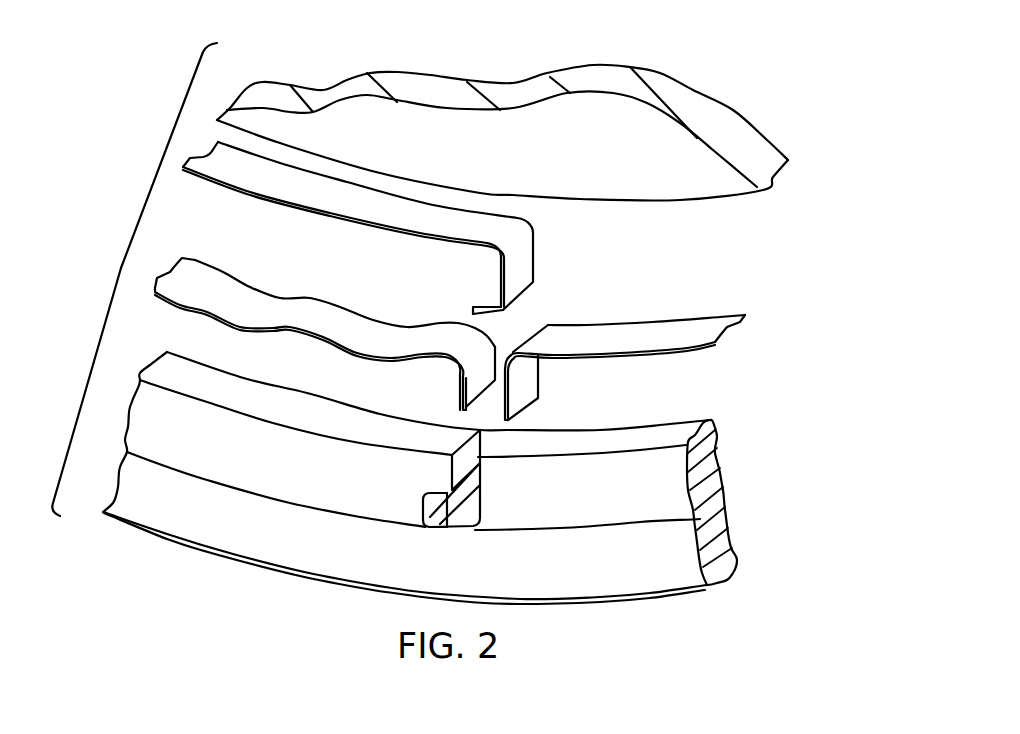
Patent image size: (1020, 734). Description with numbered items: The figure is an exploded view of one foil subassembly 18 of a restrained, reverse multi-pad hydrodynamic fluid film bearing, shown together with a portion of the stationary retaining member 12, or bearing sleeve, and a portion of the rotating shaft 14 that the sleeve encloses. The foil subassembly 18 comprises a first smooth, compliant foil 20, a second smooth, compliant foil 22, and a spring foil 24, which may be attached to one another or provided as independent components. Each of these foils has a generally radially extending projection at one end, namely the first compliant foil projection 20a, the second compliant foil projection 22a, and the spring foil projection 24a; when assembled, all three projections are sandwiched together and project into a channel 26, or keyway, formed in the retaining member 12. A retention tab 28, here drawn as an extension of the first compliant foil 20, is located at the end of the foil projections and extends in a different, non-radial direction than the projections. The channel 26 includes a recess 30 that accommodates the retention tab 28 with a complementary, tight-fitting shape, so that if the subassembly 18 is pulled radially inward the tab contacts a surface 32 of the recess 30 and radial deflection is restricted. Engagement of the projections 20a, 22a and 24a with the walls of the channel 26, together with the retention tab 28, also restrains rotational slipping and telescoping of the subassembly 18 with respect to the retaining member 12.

The stationary retaining member 12 is at (420, 478).
The shaft 14 is at (507, 127).
The foil subassembly 18 is at (585, 300).
The first compliant foil 20 is at (392, 228).
The first compliant foil projection 20a is at (513, 266).
The second compliant foil 22 is at (625, 352).
The second compliant foil projection 22a is at (528, 388).
The spring foil 24 is at (325, 334).
The spring foil projection 24a is at (478, 382).
The channel 26 is at (463, 468).
The retention tab 28 is at (493, 305).
The recess 30 is at (428, 513).
The surface of the recess 32 is at (430, 494).